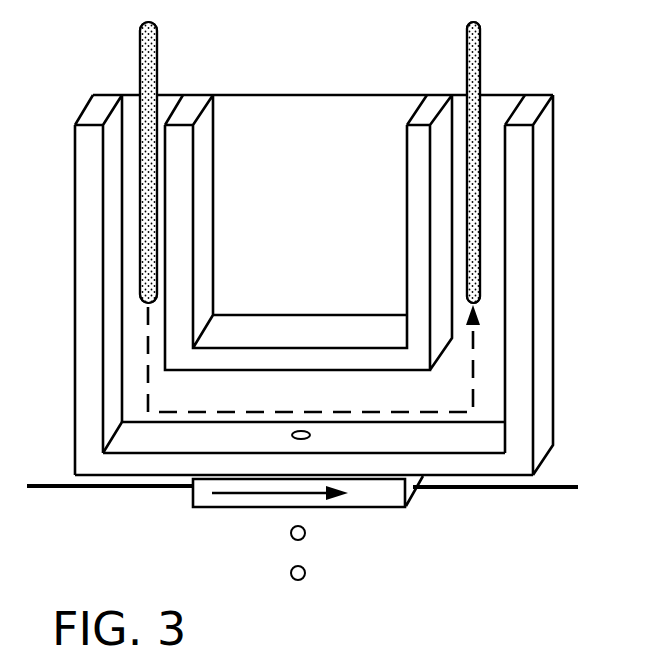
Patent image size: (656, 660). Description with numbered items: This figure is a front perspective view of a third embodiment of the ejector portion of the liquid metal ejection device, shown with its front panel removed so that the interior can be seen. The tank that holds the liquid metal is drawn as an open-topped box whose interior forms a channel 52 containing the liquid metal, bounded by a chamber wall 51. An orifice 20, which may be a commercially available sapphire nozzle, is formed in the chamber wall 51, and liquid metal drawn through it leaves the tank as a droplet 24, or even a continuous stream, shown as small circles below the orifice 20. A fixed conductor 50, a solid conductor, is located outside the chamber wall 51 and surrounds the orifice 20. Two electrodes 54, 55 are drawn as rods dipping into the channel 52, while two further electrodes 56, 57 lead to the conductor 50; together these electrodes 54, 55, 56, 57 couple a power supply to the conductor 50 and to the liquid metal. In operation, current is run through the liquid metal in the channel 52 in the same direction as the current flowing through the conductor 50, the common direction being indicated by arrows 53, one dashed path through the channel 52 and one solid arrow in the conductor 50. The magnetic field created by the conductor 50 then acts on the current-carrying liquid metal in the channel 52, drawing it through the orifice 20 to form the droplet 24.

The orifice 20 is at (310, 436).
The droplet 24 is at (306, 574).
The fixed conductor 50 is at (397, 492).
The chamber wall 51 is at (377, 467).
The channel 52 is at (247, 392).
The arrows 53 is at (480, 311).
The electrode 54 is at (140, 72).
The electrode 55 is at (466, 76).
The electrode 56 is at (68, 490).
The electrode 57 is at (550, 489).